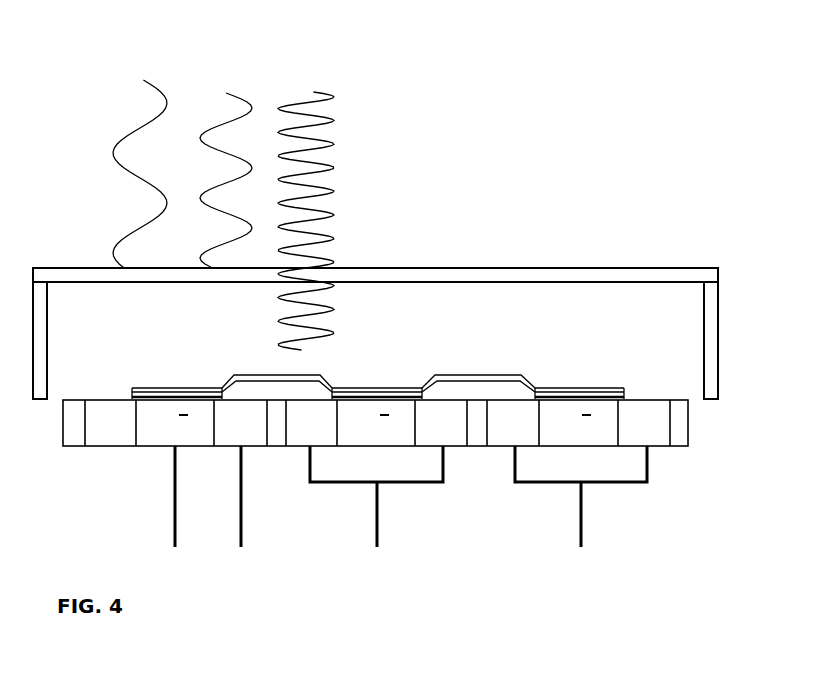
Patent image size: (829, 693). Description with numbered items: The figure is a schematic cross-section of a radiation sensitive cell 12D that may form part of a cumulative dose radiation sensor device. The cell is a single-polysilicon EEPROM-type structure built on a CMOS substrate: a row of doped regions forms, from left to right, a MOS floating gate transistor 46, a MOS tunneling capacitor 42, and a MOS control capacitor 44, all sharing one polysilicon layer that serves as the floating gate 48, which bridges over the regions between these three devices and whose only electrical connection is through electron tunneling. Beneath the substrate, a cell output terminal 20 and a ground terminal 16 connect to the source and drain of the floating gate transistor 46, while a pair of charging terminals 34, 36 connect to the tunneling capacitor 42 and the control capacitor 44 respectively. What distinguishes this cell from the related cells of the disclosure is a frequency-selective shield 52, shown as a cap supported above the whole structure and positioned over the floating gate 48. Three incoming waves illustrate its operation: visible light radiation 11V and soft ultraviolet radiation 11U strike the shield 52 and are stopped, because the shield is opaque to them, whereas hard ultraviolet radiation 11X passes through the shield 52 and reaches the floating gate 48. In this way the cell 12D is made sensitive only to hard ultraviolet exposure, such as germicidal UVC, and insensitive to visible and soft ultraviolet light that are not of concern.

The visible light radiation 11V is at (116, 161).
The soft ultraviolet radiation 11U is at (203, 150).
The hard ultraviolet radiation 11X is at (349, 215).
The radiation sensitive cell 12D is at (389, 280).
The frequency-selective shield 52 is at (375, 294).
The floating gate transistor 46 is at (162, 350).
The floating gate 48 is at (361, 357).
The tunneling capacitor 42 is at (384, 349).
The control capacitor 44 is at (587, 351).
The cell output terminal 20 is at (137, 496).
The ground terminal 16 is at (274, 496).
The charging terminal 34 is at (376, 496).
The charging terminal 36 is at (581, 496).